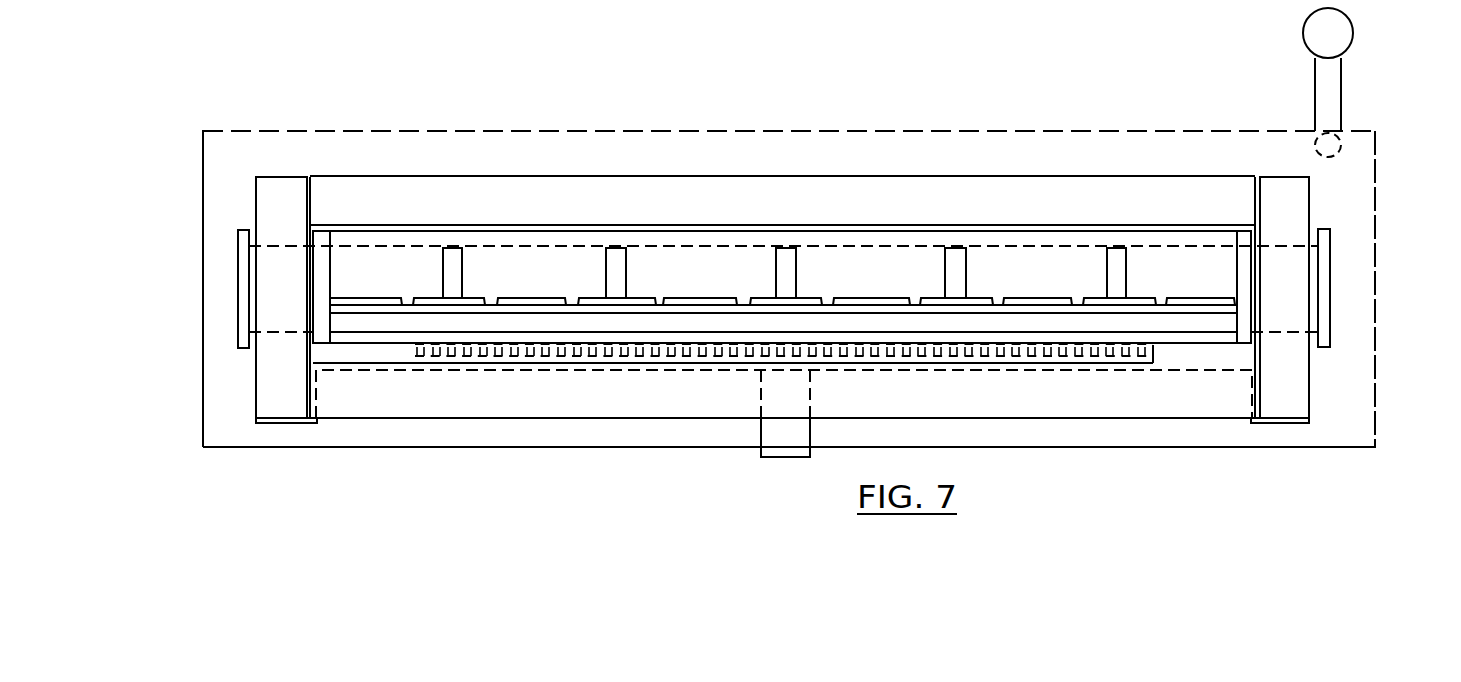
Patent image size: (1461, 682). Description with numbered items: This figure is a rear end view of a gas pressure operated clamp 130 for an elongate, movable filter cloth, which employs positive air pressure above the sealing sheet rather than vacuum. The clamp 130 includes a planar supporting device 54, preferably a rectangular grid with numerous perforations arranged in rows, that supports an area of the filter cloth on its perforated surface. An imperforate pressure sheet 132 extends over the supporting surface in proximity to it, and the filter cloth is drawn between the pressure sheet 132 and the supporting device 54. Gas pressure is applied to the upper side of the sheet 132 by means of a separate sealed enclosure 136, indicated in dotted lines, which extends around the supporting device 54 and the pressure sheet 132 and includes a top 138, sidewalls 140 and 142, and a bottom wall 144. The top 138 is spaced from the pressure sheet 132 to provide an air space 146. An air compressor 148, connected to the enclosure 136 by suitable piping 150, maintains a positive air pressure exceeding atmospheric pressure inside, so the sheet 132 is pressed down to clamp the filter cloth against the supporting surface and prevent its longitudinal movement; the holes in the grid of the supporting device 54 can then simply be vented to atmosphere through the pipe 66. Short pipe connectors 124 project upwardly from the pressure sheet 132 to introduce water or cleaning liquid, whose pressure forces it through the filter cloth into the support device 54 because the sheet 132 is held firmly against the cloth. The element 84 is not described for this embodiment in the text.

The planar supporting device 54 is at (919, 362).
The pipe 66 is at (763, 436).
The carrier plate 84 is at (536, 298).
The short pipe connectors 124 is at (443, 268).
The gas pressure operated clamp 130 is at (978, 163).
The imperforate pressure sheet 132 is at (660, 303).
The enclosure 136 is at (1148, 130).
The top 138 is at (613, 130).
The sidewall 140 is at (200, 192).
The sidewall 142 is at (1375, 208).
The bottom wall 144 is at (1190, 447).
The air space 146 is at (852, 258).
The air compressor 148 is at (1306, 30).
The piping 150 is at (1320, 90).